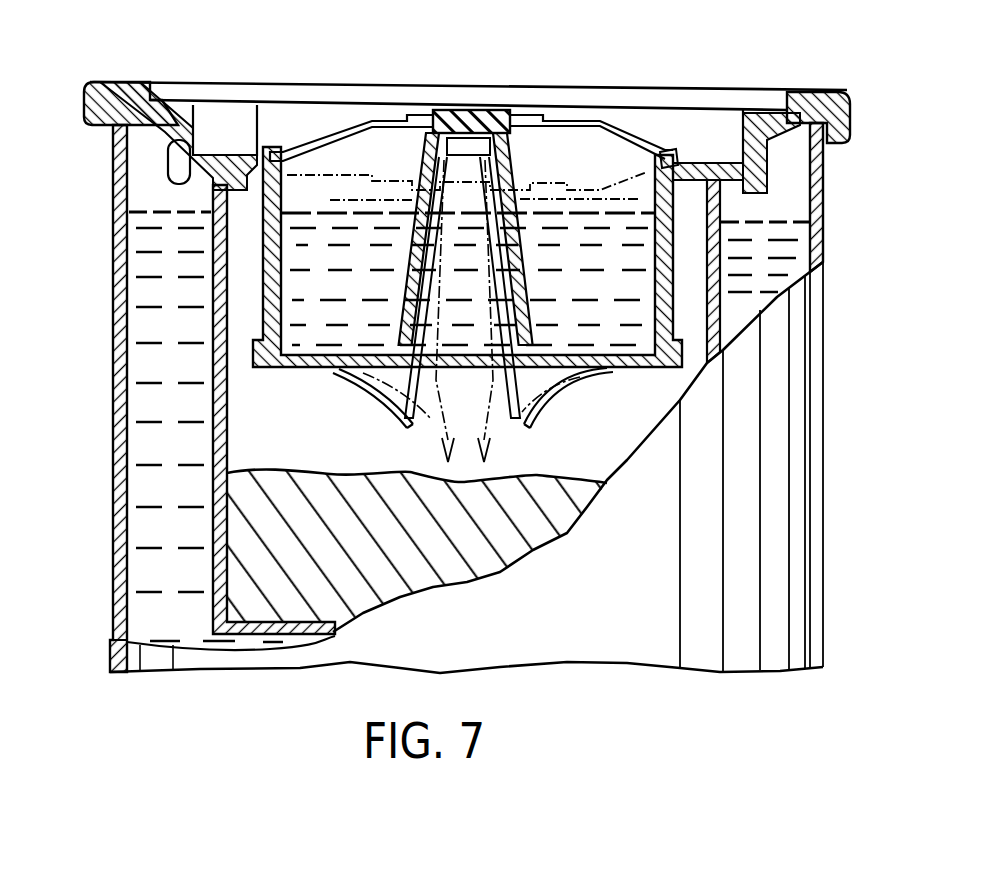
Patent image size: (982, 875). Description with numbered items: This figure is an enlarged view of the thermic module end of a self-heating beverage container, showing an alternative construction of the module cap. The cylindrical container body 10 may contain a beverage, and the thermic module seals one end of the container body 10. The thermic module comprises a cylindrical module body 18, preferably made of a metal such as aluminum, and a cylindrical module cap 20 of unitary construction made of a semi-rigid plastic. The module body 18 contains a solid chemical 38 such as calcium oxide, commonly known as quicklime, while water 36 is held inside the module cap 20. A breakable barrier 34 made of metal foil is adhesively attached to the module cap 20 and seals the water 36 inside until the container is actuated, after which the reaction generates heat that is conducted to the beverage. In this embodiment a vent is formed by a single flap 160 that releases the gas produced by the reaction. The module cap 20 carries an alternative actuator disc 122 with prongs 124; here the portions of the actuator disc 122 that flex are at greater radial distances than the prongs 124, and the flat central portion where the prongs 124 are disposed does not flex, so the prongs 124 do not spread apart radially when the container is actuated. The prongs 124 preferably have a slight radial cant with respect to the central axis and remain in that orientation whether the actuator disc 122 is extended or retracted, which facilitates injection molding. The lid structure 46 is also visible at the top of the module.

The lid cap 46 is at (117, 83).
The single flap 160 is at (262, 147).
The alternative actuator disc 122 is at (363, 117).
The container body 10 is at (112, 314).
The module body 18 is at (218, 365).
The prongs 124 is at (405, 302).
The module cap 20 is at (668, 307).
The breakable barrier 34 is at (373, 375).
The water 36 is at (614, 330).
The solid chemical 38 is at (303, 490).